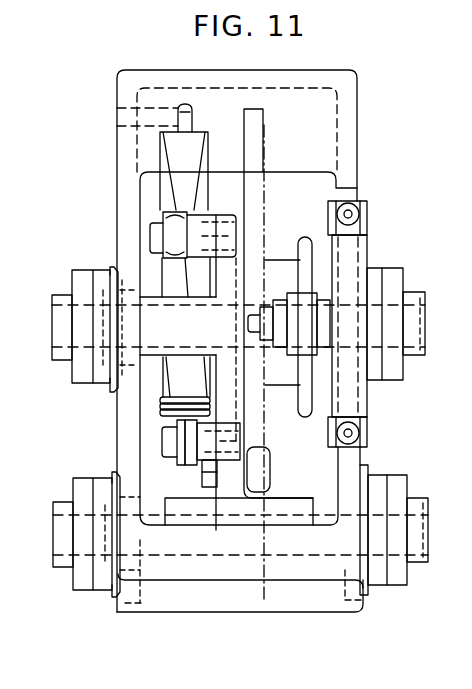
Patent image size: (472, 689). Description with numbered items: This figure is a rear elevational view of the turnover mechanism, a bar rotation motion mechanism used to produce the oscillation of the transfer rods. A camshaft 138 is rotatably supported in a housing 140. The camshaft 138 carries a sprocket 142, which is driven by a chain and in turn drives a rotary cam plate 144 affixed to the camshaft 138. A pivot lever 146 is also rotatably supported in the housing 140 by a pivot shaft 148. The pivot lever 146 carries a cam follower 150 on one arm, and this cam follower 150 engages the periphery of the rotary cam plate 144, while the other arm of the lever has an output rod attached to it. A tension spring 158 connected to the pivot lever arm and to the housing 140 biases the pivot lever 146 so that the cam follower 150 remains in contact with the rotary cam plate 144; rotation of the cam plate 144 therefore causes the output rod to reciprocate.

The camshaft 138 is at (154, 310).
The housing 140 is at (116, 154).
The sprocket 142 is at (322, 236).
The rotary cam plate 144 is at (266, 192).
The pivot lever 146 is at (225, 217).
The pivot shaft 148 is at (105, 488).
The cam follower 150 is at (268, 465).
The tension spring 158 is at (160, 148).